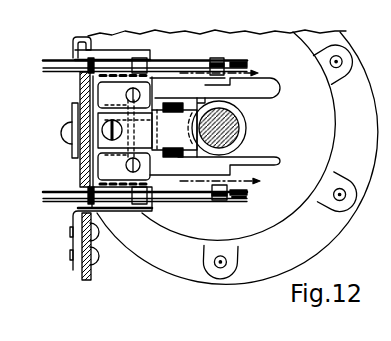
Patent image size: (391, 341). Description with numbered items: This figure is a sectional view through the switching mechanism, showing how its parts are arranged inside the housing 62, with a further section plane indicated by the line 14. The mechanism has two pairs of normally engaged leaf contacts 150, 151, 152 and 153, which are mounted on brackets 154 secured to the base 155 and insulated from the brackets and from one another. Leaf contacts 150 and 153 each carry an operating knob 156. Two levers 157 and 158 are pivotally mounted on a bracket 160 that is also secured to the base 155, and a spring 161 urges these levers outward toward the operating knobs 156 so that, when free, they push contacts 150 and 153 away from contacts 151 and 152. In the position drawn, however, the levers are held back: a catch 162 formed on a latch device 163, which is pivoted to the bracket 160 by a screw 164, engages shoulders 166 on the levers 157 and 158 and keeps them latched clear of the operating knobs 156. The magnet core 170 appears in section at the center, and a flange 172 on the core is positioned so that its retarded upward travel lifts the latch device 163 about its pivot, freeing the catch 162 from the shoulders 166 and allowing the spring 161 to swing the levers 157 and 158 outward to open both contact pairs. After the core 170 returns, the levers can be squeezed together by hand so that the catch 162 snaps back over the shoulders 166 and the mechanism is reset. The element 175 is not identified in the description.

The section line 14 is at (228, 127).
The housing 62 is at (338, 226).
The leaf contact 150 is at (226, 62).
The leaf contact 151 is at (247, 65).
The leaf contact 152 is at (248, 192).
The leaf contact 153 is at (240, 197).
The bracket 154 is at (122, 212).
The base 155 is at (84, 274).
The operating knob 156 is at (218, 200).
The lever 157 is at (276, 99).
The lever 158 is at (281, 161).
The bracket 160 is at (97, 108).
The spring 161 is at (173, 162).
The catch 162 is at (174, 130).
The latch device 163 is at (99, 118).
The screw 164 is at (104, 135).
The shoulder 166 is at (168, 103).
The magnet core 170 is at (221, 128).
The flange 172 is at (239, 116).
The clamp body 175 is at (193, 104).